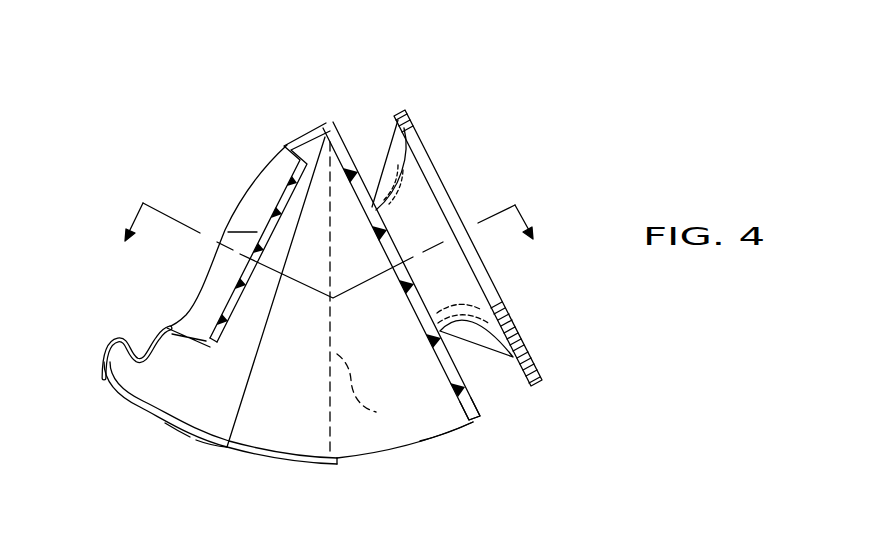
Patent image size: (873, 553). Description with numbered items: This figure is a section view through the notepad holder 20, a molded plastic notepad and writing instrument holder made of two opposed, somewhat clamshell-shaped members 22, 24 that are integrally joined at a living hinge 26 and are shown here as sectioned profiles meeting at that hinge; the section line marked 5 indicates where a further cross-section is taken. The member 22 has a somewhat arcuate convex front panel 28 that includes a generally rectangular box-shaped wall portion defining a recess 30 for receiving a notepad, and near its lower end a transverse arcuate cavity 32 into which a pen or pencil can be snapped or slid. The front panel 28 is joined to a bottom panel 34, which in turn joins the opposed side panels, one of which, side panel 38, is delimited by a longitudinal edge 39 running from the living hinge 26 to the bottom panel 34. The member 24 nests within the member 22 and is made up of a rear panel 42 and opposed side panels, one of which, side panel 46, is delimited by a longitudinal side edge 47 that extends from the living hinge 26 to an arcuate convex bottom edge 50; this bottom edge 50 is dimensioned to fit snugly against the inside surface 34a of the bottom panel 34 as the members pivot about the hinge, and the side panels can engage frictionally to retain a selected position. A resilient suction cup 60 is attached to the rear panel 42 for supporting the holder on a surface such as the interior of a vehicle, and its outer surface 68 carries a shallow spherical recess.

The section line 5- 5 is at (329, 250).
The notepad holder 20 is at (249, 148).
The clamshell-shaped member 22 is at (142, 417).
The clamshell-shaped member 24 is at (449, 438).
The living hinge 26 is at (330, 121).
The front panel 28 is at (284, 146).
The recess 30 is at (243, 217).
The cavity 32 is at (128, 345).
The bottom panel 34 is at (228, 448).
The inside surface 34a is at (203, 433).
The side panel 38 is at (193, 394).
The longitudinal edge 39 is at (373, 391).
The rear panel 42 is at (480, 392).
The side panel 46 is at (357, 441).
The longitudinal side edge 47 is at (262, 368).
The bottom edge 50 is at (390, 455).
The suction cup 60 is at (391, 159).
The surface 68 is at (406, 114).